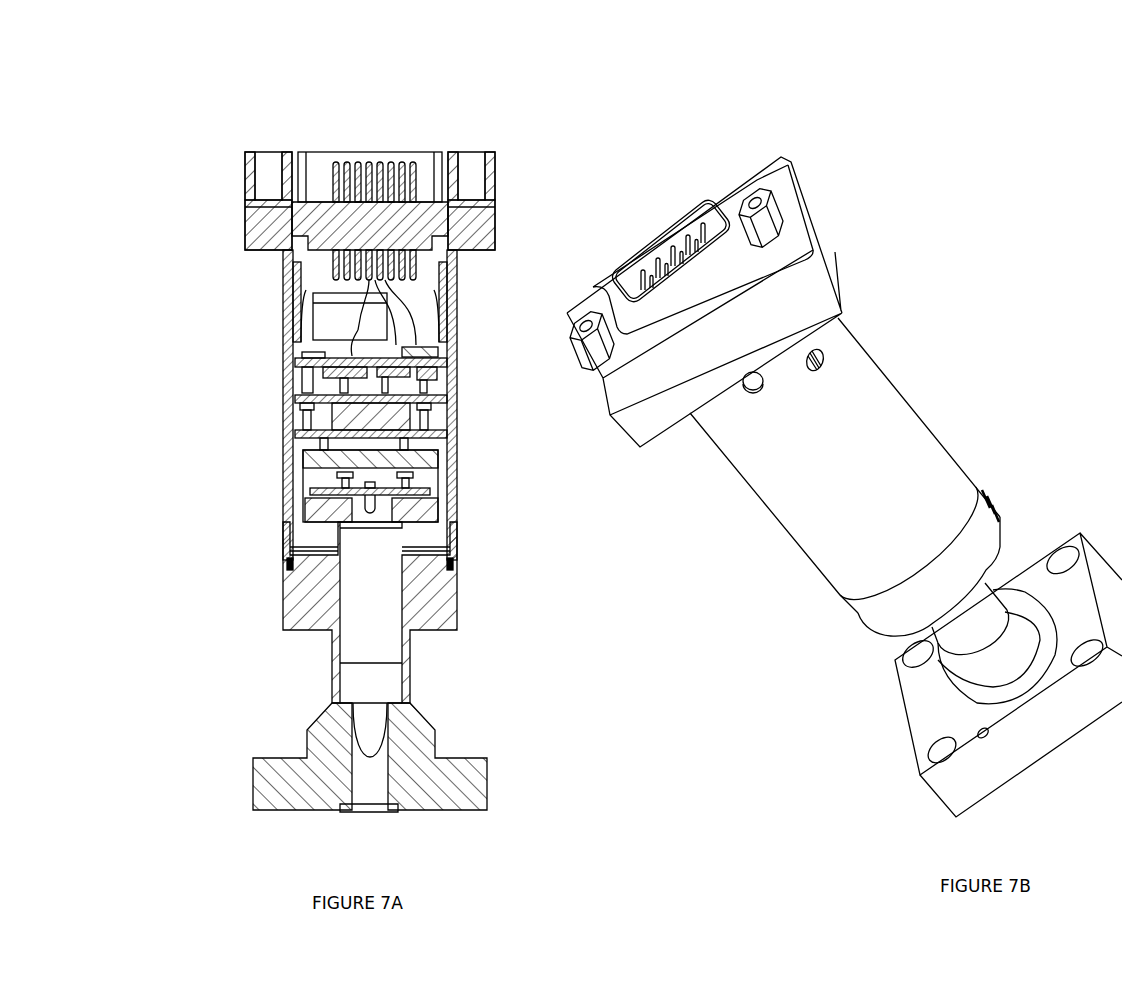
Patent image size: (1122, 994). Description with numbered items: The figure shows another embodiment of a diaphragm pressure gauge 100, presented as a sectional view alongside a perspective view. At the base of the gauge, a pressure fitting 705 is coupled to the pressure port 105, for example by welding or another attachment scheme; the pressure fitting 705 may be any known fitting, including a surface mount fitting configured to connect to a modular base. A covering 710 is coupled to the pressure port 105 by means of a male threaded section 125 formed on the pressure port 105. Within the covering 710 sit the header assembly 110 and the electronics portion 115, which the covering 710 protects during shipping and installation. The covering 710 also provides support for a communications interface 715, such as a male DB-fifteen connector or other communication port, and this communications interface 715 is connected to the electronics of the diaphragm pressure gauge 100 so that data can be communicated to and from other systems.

In FIG. 7A, the diaphragm pressure gauge 100 is at (117, 146).
In FIG. 7B, the diaphragm pressure gauge 100 is at (882, 160).
In FIG. 7B, the pressure port 105 is at (872, 616).
In FIG. 7A, the header assembly 110 is at (296, 477).
In FIG. 7A, the electronics portion 115 is at (460, 290).
In FIG. 7A, the male threaded section 125 is at (268, 548).
In FIG. 7A, the pressure fitting 705 is at (282, 761).
In FIG. 7B, the pressure fitting 705 is at (915, 707).
In FIG. 7A, the covering 710 is at (280, 347).
In FIG. 7B, the covering 710 is at (782, 489).
In FIG. 7A, the communications interface 715 is at (512, 192).
In FIG. 7B, the communications interface 715 is at (718, 190).